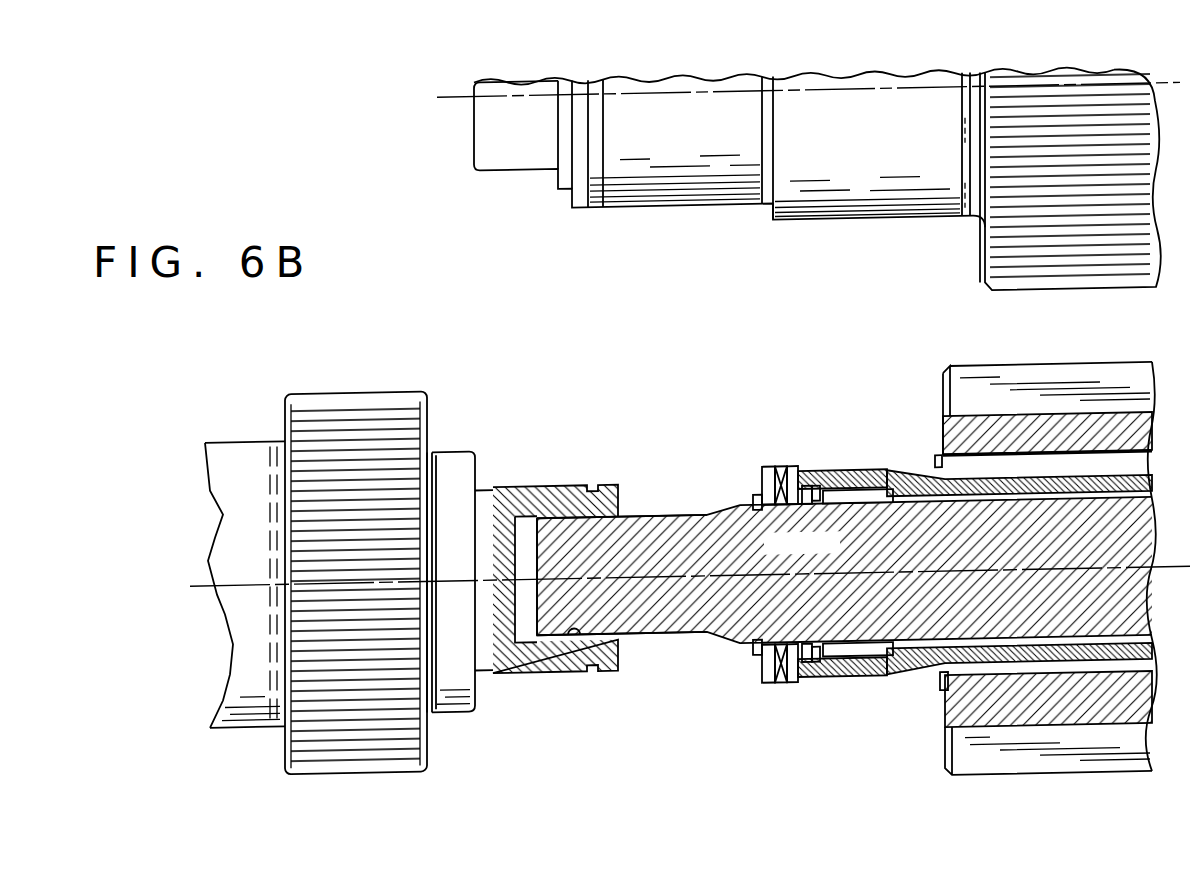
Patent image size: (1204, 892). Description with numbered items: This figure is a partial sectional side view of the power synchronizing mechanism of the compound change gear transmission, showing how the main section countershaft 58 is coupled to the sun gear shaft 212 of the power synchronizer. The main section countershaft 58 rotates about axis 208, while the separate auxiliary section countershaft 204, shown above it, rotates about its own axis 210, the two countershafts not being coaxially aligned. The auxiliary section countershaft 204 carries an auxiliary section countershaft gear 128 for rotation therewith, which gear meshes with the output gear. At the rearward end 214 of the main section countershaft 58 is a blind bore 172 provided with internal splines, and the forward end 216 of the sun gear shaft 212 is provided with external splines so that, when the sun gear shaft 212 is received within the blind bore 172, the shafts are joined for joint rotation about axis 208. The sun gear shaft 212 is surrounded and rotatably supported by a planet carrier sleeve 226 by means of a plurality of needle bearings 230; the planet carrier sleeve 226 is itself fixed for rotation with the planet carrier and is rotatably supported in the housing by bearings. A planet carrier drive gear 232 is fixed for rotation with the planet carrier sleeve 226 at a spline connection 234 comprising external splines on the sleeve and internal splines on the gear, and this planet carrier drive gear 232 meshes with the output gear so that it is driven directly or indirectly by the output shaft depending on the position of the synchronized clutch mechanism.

The main section countershaft 58 is at (320, 631).
The auxiliary section countershaft gear 128 is at (1000, 270).
The blind bore 172 is at (568, 636).
The auxiliary section countershaft 204 is at (843, 197).
The axis of rotation of main section countershaft 208 is at (257, 573).
The axis of rotation of auxiliary section countershaft 210 is at (712, 96).
The sun gear shaft 212 is at (844, 572).
The rearward end 214 is at (545, 486).
The forward end 216 is at (643, 547).
The planet carrier sleeve 226 is at (820, 473).
The needle bearings 230 is at (861, 502).
The planet carrier drive gear 232 is at (950, 764).
The spline connection 234 is at (1005, 473).